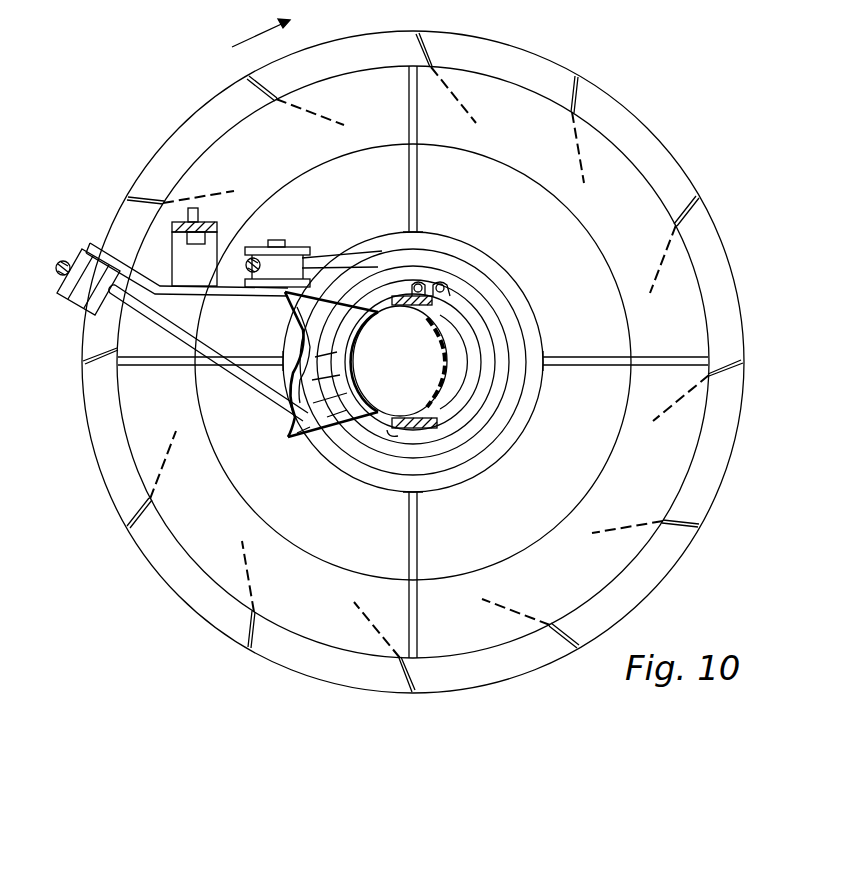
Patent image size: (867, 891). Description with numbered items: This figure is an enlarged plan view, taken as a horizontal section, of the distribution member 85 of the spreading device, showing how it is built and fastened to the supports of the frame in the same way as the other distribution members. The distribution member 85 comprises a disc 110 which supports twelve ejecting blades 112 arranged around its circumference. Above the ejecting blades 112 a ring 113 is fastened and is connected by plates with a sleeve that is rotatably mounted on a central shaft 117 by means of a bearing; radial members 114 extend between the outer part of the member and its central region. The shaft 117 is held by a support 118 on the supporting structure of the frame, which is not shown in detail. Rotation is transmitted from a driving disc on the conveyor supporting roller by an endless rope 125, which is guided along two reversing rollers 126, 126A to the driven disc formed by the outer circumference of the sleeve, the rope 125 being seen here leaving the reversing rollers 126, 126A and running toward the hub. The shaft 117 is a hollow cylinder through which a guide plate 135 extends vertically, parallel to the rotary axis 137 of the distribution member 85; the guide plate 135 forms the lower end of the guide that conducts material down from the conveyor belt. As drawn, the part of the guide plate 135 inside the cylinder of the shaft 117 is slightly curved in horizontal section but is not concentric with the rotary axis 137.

The distribution member 85 is at (190, 117).
The disc 110 is at (597, 95).
The ejecting blades 112 is at (567, 118).
The ring 113 is at (597, 220).
The spokes 114 is at (405, 186).
The shaft 117 is at (385, 430).
The support 118 is at (403, 291).
The endless rope 125 is at (265, 401).
The reversing roller 126 is at (76, 253).
The reversing roller 126A is at (303, 246).
The guide plate 135 is at (447, 351).
The rotary axis 137 is at (421, 346).